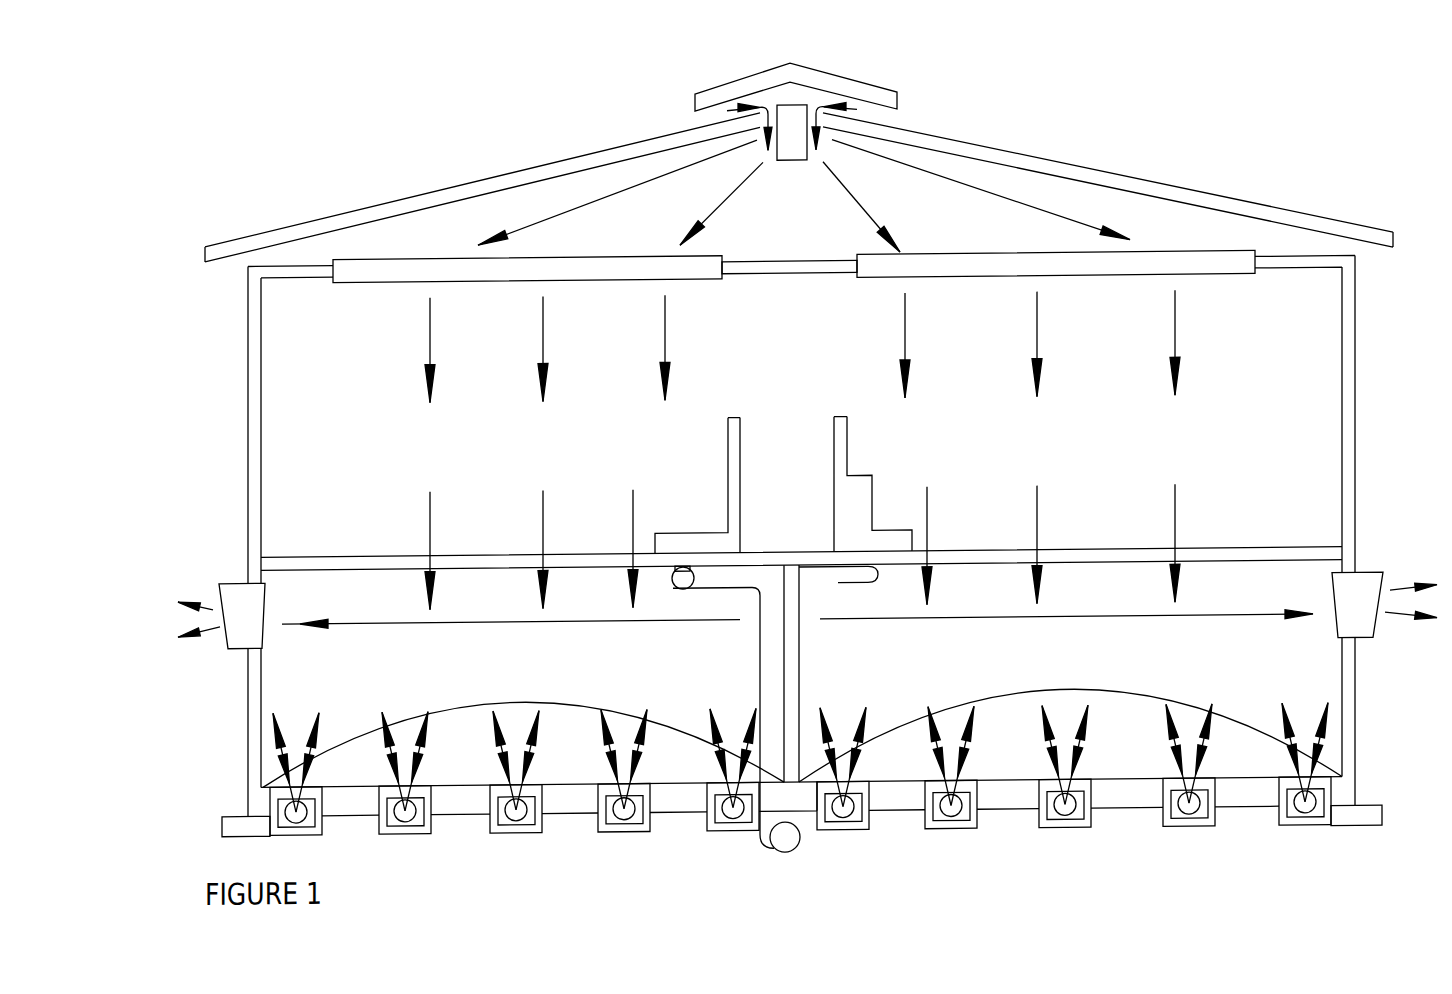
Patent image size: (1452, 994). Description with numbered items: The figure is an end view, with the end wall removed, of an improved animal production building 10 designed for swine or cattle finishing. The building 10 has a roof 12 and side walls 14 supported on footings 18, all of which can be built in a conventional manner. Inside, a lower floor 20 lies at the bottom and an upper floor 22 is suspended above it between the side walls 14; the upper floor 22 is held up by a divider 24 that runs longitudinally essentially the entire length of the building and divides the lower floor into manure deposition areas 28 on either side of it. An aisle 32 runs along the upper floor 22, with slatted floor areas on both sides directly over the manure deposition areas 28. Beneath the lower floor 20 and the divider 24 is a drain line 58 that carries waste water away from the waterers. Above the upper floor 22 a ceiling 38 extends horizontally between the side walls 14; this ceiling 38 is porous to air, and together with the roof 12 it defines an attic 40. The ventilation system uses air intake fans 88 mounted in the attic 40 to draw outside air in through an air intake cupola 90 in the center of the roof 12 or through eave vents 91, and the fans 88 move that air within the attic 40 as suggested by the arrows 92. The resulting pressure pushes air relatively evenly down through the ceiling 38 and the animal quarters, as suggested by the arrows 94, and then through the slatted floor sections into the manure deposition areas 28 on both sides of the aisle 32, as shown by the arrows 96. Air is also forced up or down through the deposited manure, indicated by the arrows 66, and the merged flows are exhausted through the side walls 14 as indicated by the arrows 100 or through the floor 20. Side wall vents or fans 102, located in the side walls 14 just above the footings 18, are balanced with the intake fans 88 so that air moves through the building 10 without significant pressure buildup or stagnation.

The animal production building 10 is at (1022, 155).
The roof 12 is at (1137, 191).
The side walls 14 is at (248, 468).
The footings 18 is at (240, 819).
The lower floor 20 is at (448, 792).
The upper floor 22 is at (447, 559).
The dividers 24 is at (800, 676).
The manure deposition areas 28 is at (464, 682).
The aisle 32 is at (783, 485).
The ceiling 38 is at (772, 286).
The attic 40 is at (792, 167).
The drain line 58 is at (752, 598).
The arrows 66 is at (625, 742).
The air intake fans 88 is at (798, 168).
The air intake cupola 90 is at (808, 75).
The eave vents 91 is at (1352, 258).
The arrows 92 is at (305, 250).
The arrows 94 is at (658, 358).
The arrows 96 is at (930, 521).
The arrows 100 is at (340, 627).
The side wall vents or fans 102 is at (230, 586).